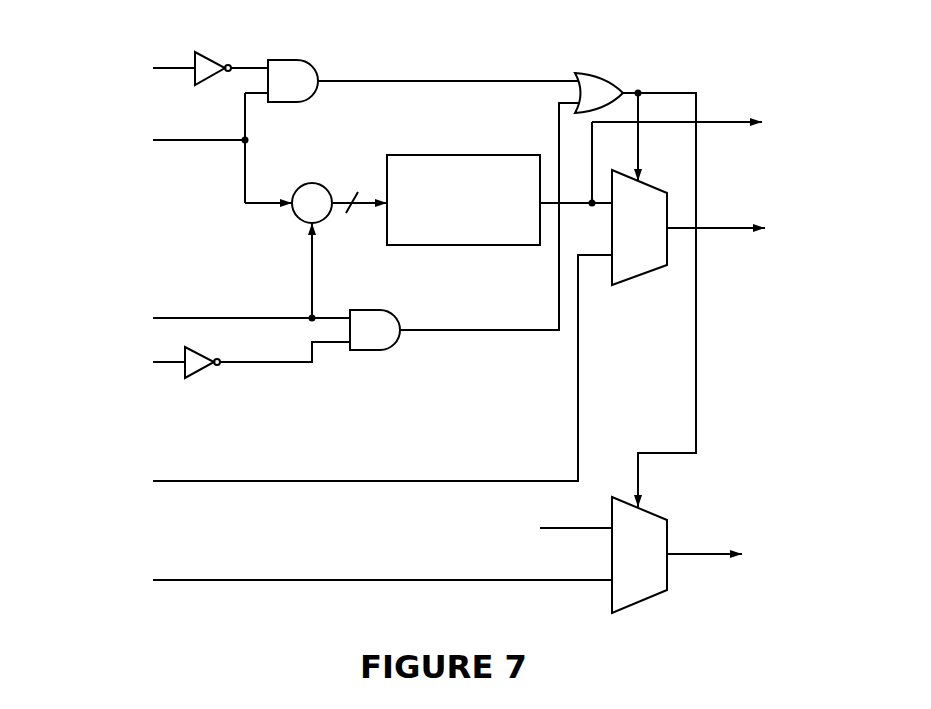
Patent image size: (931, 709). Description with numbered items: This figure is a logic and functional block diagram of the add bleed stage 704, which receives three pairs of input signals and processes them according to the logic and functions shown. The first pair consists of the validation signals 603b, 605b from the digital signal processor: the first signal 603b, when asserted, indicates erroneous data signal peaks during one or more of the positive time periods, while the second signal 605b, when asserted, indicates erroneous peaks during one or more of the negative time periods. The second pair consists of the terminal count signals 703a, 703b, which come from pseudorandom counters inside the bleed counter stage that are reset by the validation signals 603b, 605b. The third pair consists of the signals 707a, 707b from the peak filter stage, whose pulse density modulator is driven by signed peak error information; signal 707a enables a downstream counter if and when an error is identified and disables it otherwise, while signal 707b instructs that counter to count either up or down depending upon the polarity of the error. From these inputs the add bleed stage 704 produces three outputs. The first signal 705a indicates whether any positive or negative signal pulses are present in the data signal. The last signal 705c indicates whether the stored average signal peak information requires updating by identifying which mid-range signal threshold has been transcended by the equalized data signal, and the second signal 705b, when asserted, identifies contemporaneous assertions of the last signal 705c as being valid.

The add bleed stage 704 is at (218, 649).
The first validation signal 603b is at (175, 65).
The second validation signal 605b is at (162, 363).
The terminal count signal 703a is at (192, 143).
The terminal count signal 703b is at (193, 320).
The first output signal 705a is at (712, 122).
The second output signal 705b is at (730, 230).
The last output signal 705c is at (700, 552).
The peak filter output signal 707a is at (282, 480).
The peak filter output signal 707b is at (242, 578).